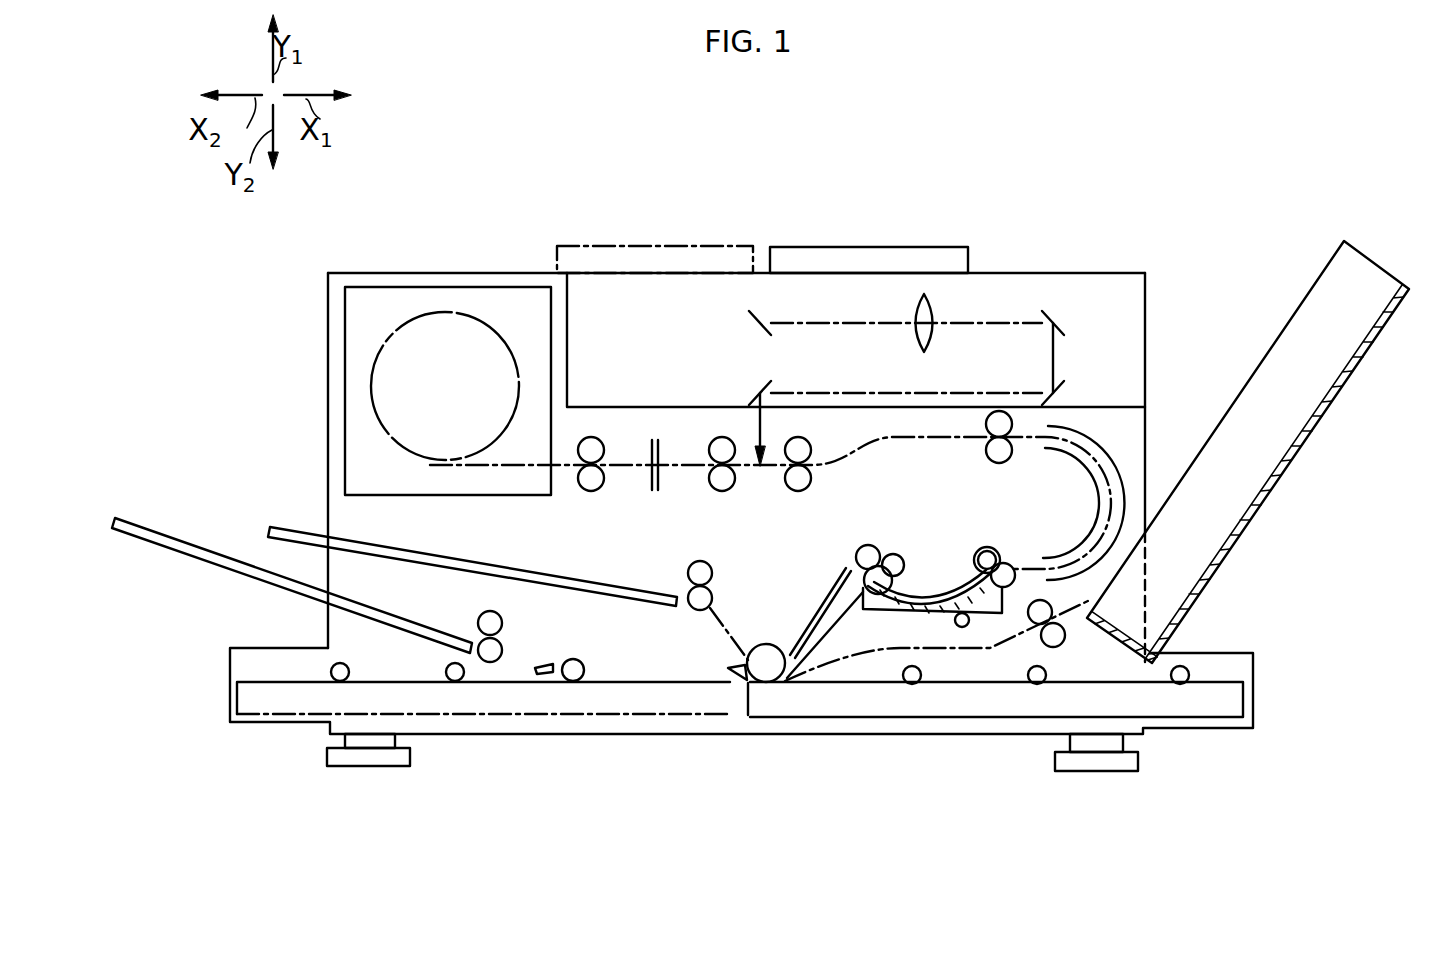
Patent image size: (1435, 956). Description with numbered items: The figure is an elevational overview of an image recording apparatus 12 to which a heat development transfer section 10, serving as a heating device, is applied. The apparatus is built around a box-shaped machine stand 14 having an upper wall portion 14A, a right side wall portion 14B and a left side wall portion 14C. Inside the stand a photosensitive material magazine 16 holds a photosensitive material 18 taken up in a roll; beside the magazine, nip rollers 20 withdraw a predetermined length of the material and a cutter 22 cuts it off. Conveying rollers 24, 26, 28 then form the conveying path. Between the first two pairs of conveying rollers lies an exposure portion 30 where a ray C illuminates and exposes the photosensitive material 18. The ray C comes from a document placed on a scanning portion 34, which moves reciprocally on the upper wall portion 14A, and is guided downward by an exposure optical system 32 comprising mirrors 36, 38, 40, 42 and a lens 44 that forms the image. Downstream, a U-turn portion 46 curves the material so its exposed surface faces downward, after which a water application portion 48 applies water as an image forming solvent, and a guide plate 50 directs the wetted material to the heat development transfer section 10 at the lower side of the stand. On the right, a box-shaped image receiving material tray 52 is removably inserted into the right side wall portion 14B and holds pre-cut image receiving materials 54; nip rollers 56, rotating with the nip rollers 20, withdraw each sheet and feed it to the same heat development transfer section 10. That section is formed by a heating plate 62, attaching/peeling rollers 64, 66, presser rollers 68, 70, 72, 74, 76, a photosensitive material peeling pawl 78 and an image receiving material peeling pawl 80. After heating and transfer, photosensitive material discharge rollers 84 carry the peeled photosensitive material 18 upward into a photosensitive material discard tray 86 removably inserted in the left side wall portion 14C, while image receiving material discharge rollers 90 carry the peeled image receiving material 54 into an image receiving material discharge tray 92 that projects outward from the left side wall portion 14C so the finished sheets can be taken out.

The heat development transfer section 10 is at (741, 715).
The image recording apparatus 12 is at (1013, 165).
The machine stand 14 is at (741, 472).
The upper wall portion 14A is at (452, 272).
The right side wall portion 14B is at (1147, 436).
The left side wall portion 14C is at (328, 425).
The photosensitive material magazine 16 is at (388, 287).
The photosensitive material 18 is at (378, 348).
The nip rollers 20 is at (600, 490).
The cutter 22 is at (652, 486).
The conveying rollers 24 is at (712, 490).
The conveying rollers 26 is at (808, 490).
The conveying rollers 28 is at (1003, 462).
The exposure portion 30 is at (761, 480).
The exposure optical system 32 is at (881, 288).
The scanning portion 34 is at (632, 245).
The mirror 36 is at (756, 326).
The mirror 38 is at (1057, 318).
The mirror 40 is at (1060, 395).
The mirror 42 is at (756, 390).
The lens 44 is at (930, 308).
The U-turn portion 46 is at (1098, 500).
The water application portion 48 is at (928, 572).
The guide plate 50 is at (828, 598).
The image receiving material tray 52 is at (1343, 387).
The image receiving material 54 is at (942, 650).
The nip rollers 56 is at (1062, 645).
The heating plate 62 is at (567, 705).
The attaching/peeling roller 64 is at (768, 644).
The attaching/peeling roller 66 is at (585, 662).
The presser roller 68 is at (462, 680).
The presser roller 70 is at (331, 670).
The presser roller 72 is at (904, 673).
The presser roller 74 is at (1030, 673).
The presser roller 76 is at (1172, 671).
The photosensitive material peeling pawl 78 is at (744, 668).
The image receiving material peeling pawl 80 is at (545, 663).
The photosensitive material discharge rollers 84 is at (710, 568).
The photosensitive material discard tray 86 is at (520, 568).
The image receiving material discharge rollers 90 is at (480, 614).
The image receiving material discharge tray 92 is at (228, 553).
The ray C is at (760, 425).